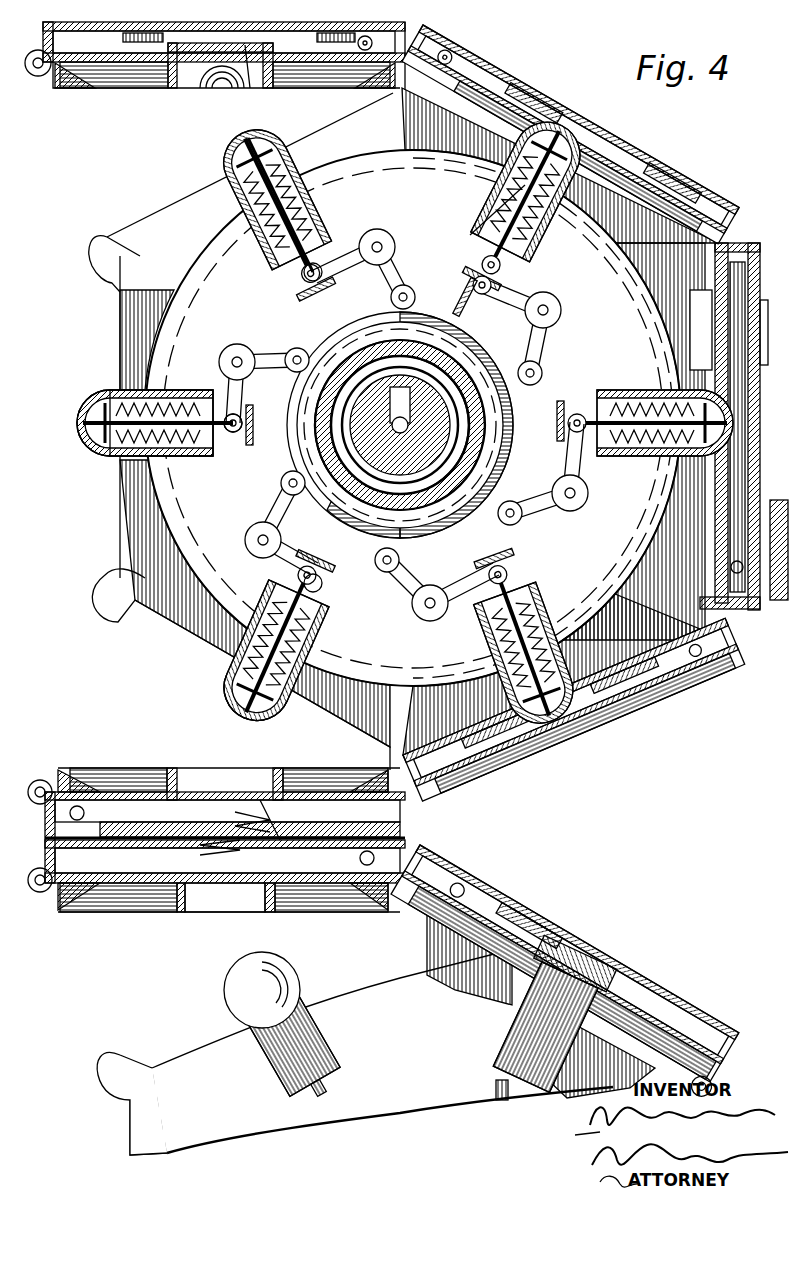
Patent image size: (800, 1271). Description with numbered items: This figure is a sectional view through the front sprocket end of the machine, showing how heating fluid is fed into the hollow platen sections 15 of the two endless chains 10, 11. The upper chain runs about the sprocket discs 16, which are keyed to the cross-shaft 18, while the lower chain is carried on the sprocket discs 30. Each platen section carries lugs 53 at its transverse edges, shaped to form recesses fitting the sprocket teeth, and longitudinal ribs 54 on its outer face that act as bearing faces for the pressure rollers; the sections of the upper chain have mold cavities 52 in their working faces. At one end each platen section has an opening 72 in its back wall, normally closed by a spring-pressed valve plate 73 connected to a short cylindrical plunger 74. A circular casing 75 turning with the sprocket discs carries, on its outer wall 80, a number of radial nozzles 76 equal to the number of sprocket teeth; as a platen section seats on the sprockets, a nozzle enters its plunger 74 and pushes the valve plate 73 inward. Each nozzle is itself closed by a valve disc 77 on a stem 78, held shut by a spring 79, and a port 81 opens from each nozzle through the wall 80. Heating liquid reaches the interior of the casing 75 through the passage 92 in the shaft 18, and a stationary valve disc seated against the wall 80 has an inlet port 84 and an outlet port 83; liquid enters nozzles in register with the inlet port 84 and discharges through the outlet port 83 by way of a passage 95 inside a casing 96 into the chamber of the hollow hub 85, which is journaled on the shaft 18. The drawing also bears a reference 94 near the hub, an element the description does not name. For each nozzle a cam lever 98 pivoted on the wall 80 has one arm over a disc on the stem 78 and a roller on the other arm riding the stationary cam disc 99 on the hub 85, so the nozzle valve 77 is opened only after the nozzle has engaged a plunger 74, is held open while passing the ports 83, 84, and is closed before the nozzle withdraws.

The endless chain 10 is at (467, 54).
The endless chain 11 is at (69, 919).
The platen section 15 is at (117, 99).
The sprocket discs 16 is at (339, 133).
The cross-shaft 18 is at (365, 428).
The sprocket discs 30 is at (132, 1125).
The mold cavities 52 is at (690, 200).
The lugs 53 is at (80, 92).
The ribs 54 is at (150, 80).
The opening 72 is at (225, 70).
The valve plate 73 is at (240, 70).
The plunger 74 is at (190, 88).
The circular casing 75 is at (196, 262).
The nozzles 76 is at (228, 172).
The valve disc 77 is at (243, 137).
The stem 78 is at (304, 280).
The spring 79 is at (100, 445).
The outer wall 80 is at (165, 487).
The port 81 is at (490, 222).
The outlet port 83 is at (600, 361).
The inlet port 84 is at (575, 560).
The hollow hub 85 is at (432, 360).
The passage 92 is at (375, 470).
The hub groove 94 is at (395, 402).
The passage 95 is at (452, 300).
The casing 96 is at (362, 330).
The cam lever 98 is at (400, 600).
The cam disc 99 is at (520, 480).